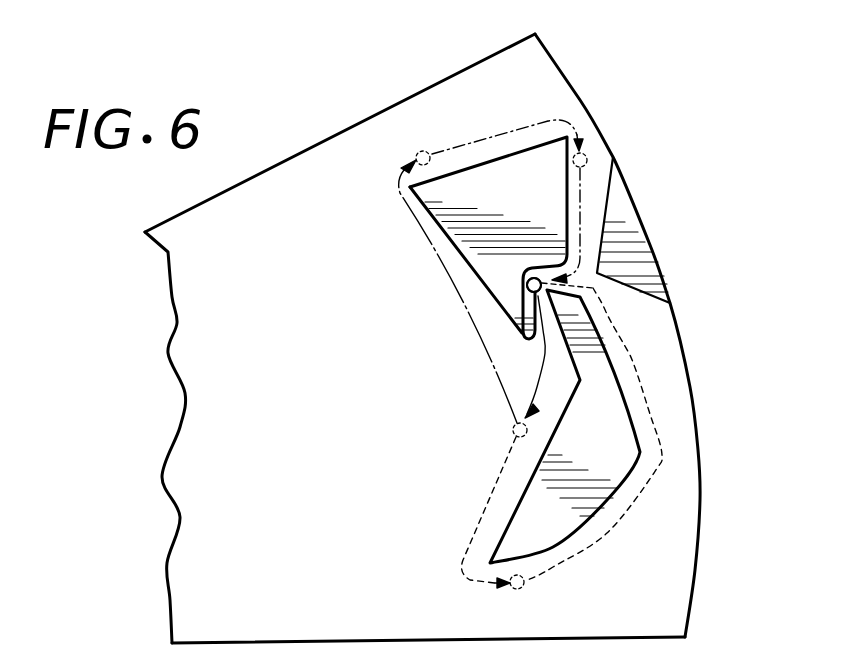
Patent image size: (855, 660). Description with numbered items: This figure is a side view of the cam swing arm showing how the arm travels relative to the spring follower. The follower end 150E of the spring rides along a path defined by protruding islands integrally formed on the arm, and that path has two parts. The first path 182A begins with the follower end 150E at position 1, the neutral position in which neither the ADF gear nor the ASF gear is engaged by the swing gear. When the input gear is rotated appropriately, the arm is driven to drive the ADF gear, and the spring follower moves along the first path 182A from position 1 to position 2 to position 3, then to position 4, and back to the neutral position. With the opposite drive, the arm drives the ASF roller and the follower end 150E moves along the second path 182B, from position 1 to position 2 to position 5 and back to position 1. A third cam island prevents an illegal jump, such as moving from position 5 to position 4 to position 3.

The first path 182A is at (428, 236).
The second path 182B is at (640, 395).
The follower end of the spring 150E is at (527, 287).
The position 1 is at (519, 276).
The position 2 is at (502, 438).
The position 3 is at (421, 145).
The position 4 is at (589, 165).
The position 5 is at (524, 594).